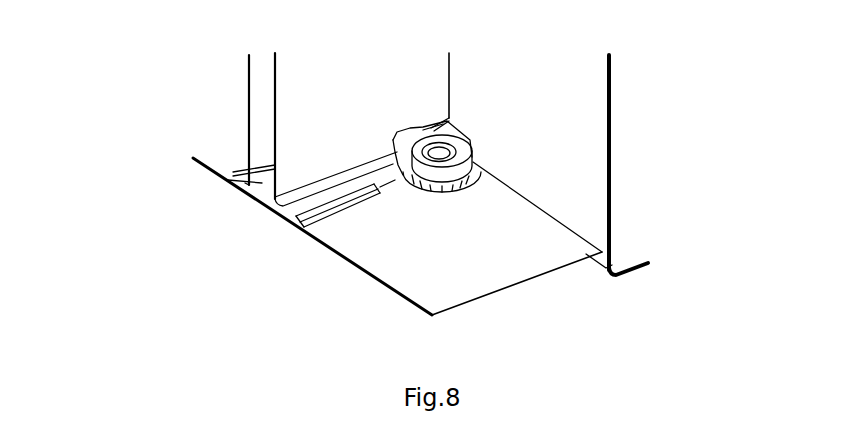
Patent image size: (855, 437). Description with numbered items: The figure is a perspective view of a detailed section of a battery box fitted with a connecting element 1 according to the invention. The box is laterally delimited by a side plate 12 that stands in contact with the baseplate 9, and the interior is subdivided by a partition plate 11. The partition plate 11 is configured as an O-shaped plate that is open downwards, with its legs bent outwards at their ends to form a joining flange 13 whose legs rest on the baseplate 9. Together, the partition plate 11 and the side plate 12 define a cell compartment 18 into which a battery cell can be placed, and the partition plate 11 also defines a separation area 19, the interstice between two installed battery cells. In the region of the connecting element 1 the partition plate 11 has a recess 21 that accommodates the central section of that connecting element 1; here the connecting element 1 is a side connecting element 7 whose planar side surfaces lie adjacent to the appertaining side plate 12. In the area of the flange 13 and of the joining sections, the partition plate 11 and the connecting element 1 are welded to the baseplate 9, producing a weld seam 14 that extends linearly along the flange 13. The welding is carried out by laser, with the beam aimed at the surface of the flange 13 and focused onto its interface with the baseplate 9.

The connecting element 1 is at (550, 162).
The side connecting element 7 is at (548, 168).
The baseplate 9 is at (432, 293).
The partition plate 11 is at (258, 73).
The side plate 12 is at (557, 95).
The joining flange 13 is at (250, 176).
The weld seam 14 is at (387, 182).
The cell compartment 18 is at (485, 222).
The separation area 19 is at (258, 188).
The recess 21 is at (407, 127).